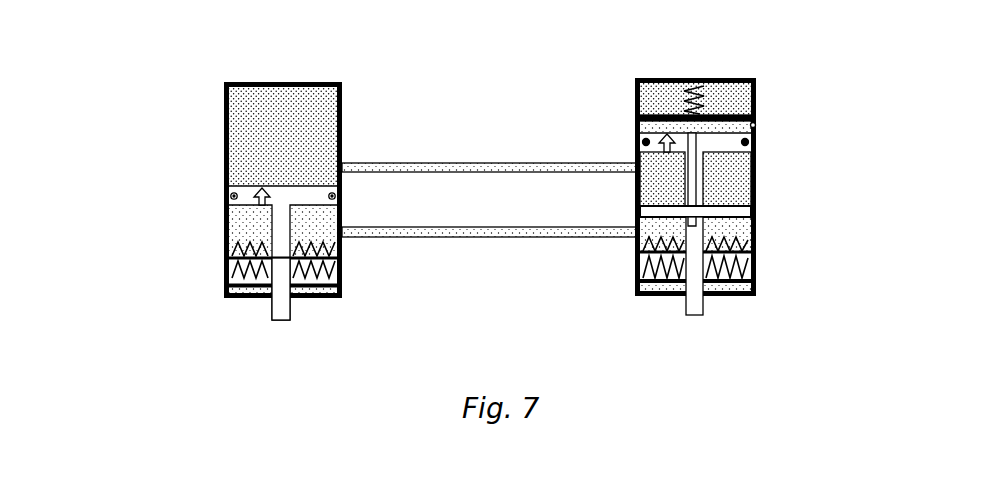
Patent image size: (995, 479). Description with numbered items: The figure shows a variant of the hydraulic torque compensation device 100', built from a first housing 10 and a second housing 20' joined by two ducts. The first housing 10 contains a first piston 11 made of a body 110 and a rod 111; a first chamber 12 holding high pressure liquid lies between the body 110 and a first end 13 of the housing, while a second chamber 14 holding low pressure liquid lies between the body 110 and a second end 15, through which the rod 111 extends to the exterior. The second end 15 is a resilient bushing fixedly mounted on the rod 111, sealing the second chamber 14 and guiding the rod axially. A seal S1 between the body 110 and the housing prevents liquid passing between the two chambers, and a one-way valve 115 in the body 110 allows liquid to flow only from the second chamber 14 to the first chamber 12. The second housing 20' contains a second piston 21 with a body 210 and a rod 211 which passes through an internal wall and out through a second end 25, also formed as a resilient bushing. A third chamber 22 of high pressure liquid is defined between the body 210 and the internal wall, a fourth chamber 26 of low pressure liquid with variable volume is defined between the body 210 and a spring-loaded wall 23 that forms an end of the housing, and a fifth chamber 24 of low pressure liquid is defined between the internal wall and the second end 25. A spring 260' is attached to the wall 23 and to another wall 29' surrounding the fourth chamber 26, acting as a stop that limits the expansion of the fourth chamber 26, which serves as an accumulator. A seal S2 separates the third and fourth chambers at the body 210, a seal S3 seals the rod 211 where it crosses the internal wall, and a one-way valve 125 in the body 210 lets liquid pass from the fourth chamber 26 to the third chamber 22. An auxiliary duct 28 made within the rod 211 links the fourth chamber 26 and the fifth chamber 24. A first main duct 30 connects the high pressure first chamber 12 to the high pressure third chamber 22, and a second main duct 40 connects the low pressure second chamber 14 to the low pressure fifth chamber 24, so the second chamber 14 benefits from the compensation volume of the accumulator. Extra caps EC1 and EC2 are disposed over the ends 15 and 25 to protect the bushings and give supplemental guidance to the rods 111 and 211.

The hydraulic torque compensation device 100' is at (465, 192).
The first housing 10 is at (200, 183).
The first piston 11 is at (283, 183).
The first chamber 12 is at (312, 116).
The first end of the first housing 13 is at (268, 75).
The second chamber 14 is at (250, 233).
The second end of the first housing 15 is at (244, 262).
The body of the first piston 110 is at (343, 210).
The rod of the first piston 111 is at (292, 310).
The one-way valve 115 is at (250, 183).
The seal S1 is at (345, 195).
The extra cap EC1 is at (240, 300).
The first main duct 30 is at (500, 160).
The second main duct 40 is at (495, 240).
The second housing 20' is at (702, 190).
The second piston 21 is at (680, 174).
The third chamber 22 is at (722, 190).
The spring-loaded wall 23 is at (720, 112).
The fifth chamber 24 is at (734, 235).
The second end of the second housing 25 is at (756, 288).
The fourth chamber 26 is at (758, 125).
The auxiliary duct 28 is at (720, 208).
The wall 29' is at (677, 53).
The one-way valve 125 is at (652, 141).
The body of the second piston 210 is at (756, 95).
The rod of the second piston 211 is at (705, 312).
The spring 260' is at (649, 93).
The seal S2 is at (632, 148).
The seal S3 is at (676, 206).
The extra cap EC2 is at (660, 298).